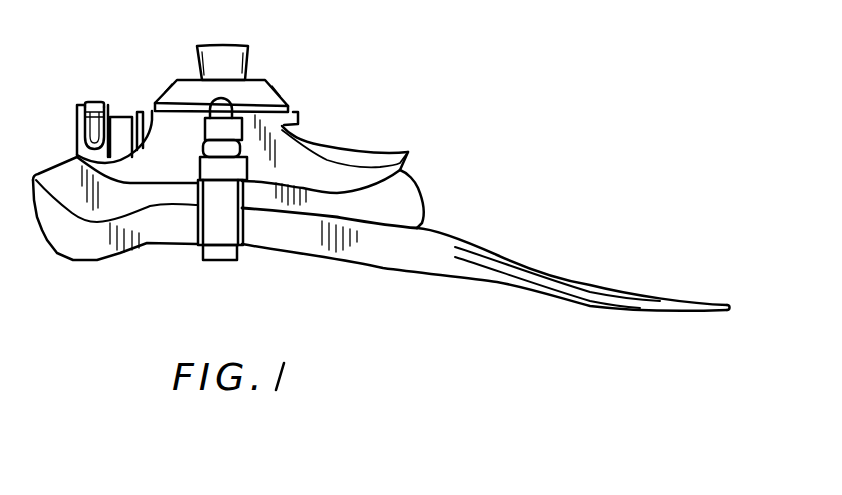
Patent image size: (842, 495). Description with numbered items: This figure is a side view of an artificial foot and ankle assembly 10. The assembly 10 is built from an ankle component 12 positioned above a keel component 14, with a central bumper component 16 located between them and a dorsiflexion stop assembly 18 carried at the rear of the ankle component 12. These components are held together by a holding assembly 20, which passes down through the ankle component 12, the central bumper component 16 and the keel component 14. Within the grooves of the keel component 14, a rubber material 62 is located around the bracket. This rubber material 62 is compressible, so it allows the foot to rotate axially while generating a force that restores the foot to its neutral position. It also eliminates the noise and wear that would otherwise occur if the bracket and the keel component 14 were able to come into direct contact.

The artificial foot and ankle assembly 10 is at (445, 120).
The ankle component 12 is at (303, 136).
The keel component 14 is at (400, 262).
The central bumper component 16 is at (410, 197).
The dorsiflexion stop assembly 18 is at (103, 100).
The holding assembly 20 is at (212, 262).
The rubber material 62 is at (243, 230).